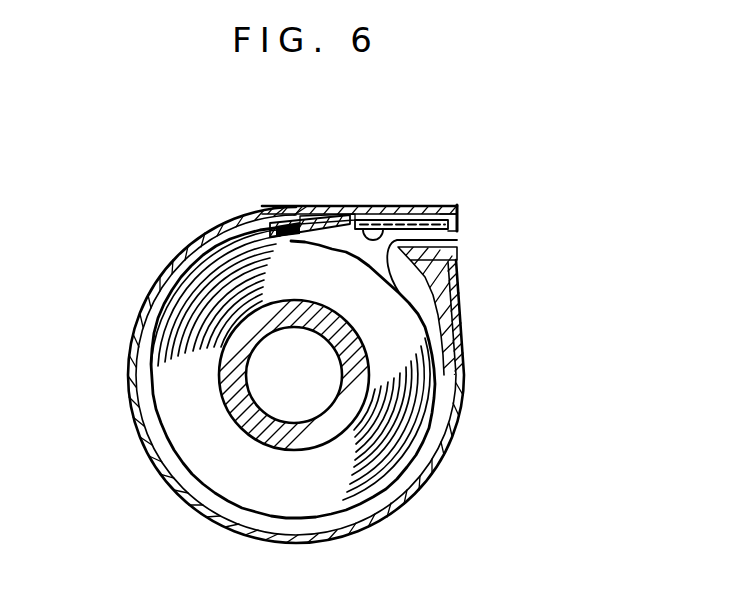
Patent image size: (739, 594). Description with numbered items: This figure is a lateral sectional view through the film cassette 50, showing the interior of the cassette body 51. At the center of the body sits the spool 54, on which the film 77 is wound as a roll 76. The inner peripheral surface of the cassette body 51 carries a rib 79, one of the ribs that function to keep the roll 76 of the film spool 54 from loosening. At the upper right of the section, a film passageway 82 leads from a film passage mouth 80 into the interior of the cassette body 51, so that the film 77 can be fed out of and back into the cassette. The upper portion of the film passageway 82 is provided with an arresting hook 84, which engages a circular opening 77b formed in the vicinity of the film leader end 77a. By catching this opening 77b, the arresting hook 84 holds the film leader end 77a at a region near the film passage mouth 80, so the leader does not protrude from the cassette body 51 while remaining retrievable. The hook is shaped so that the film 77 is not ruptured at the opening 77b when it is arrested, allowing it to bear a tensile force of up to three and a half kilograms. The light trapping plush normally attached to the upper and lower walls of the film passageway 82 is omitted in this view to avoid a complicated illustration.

The film cassette 50 is at (118, 320).
The cassette body 51 is at (456, 414).
The spool 54 is at (255, 428).
The roll 76 is at (430, 358).
The film 77 is at (290, 207).
The film leader end 77a is at (450, 207).
The circular opening 77b is at (332, 207).
The rib 79 is at (198, 256).
The film passage mouth 80 is at (482, 240).
The film passageway 82 is at (447, 231).
The arresting hook 84 is at (392, 207).